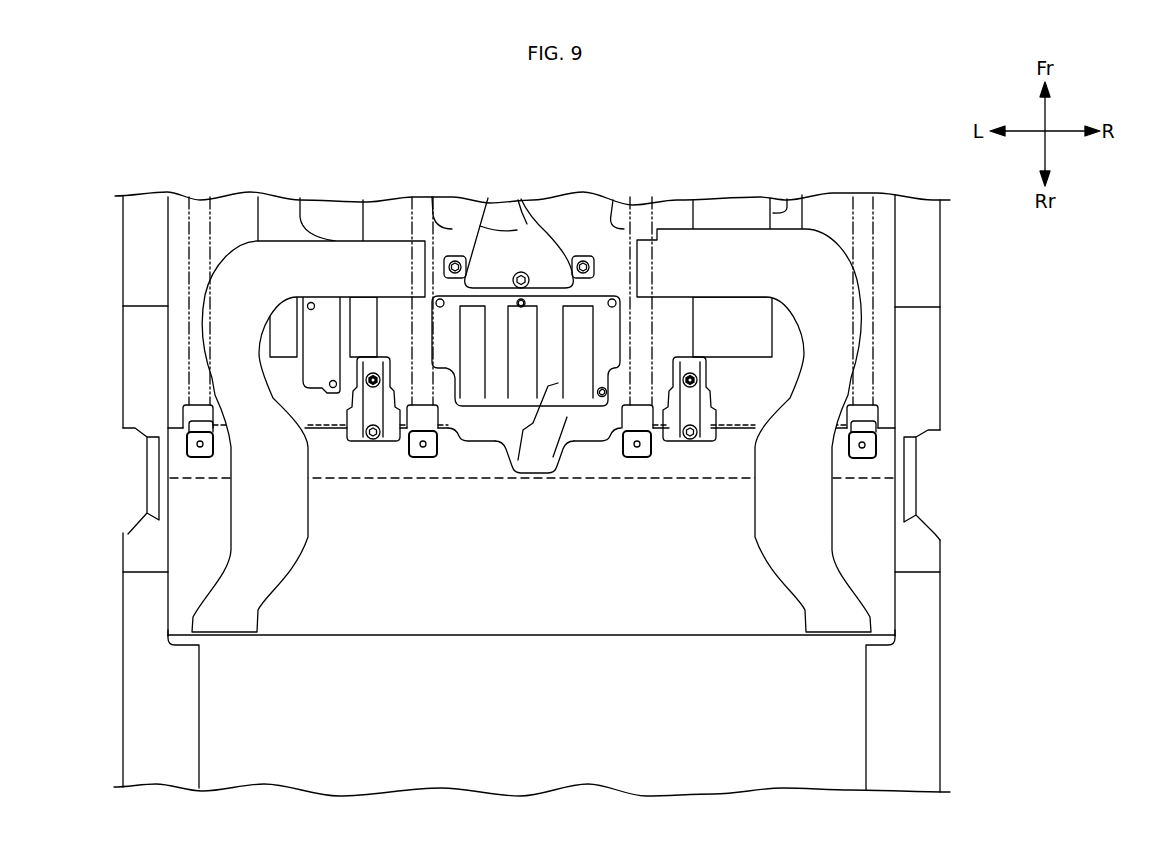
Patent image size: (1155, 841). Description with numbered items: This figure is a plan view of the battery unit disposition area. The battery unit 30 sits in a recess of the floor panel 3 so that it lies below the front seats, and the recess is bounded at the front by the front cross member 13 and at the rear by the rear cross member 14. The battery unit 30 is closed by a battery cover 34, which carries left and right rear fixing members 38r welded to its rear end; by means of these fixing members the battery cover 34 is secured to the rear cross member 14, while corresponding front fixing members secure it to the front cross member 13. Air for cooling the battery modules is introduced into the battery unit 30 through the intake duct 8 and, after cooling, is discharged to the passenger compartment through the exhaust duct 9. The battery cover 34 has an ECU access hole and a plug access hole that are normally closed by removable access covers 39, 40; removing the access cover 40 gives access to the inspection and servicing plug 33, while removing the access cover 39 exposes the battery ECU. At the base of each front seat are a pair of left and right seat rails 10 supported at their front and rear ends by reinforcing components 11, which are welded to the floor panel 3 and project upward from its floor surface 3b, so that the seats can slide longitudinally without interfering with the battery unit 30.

The floor panel 3 is at (532, 494).
The floor surface 3b is at (562, 596).
The intake duct 8 is at (538, 243).
The exhaust duct 9 is at (531, 382).
The seat rails 10 is at (440, 232).
The reinforcing components 11 is at (188, 444).
The front cross member 13 is at (780, 207).
The rear cross member 14 is at (480, 480).
The battery unit 30 is at (526, 413).
The inspection and servicing plug 33 is at (327, 333).
The battery cover 34 is at (747, 393).
The rear fixing members 38r is at (372, 440).
The access cover 39 is at (533, 447).
The access cover 40 is at (320, 247).